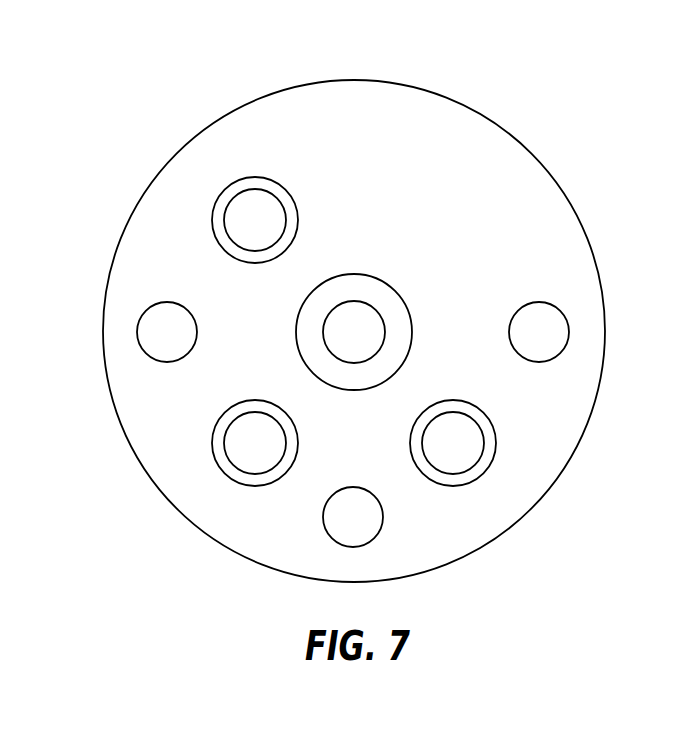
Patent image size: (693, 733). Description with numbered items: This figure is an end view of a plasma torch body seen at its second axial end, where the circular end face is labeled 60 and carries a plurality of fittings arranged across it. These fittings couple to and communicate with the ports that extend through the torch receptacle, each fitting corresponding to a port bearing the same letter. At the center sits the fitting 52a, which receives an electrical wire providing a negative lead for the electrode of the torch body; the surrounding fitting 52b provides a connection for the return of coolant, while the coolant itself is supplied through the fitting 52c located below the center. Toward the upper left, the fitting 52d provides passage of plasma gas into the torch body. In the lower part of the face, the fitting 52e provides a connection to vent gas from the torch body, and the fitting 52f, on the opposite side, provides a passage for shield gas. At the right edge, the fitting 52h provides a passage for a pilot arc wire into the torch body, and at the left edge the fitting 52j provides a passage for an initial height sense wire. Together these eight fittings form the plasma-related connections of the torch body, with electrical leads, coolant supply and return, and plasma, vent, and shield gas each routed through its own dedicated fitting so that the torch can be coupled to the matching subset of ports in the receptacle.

The circular plate 60 is at (315, 82).
The fitting 52a is at (354, 301).
The fitting 52b is at (412, 318).
The fitting 52c is at (387, 525).
The fitting 52d is at (240, 187).
The fitting 52e is at (242, 470).
The fitting 52f is at (466, 470).
The fitting 52h is at (540, 300).
The fitting 52j is at (152, 303).